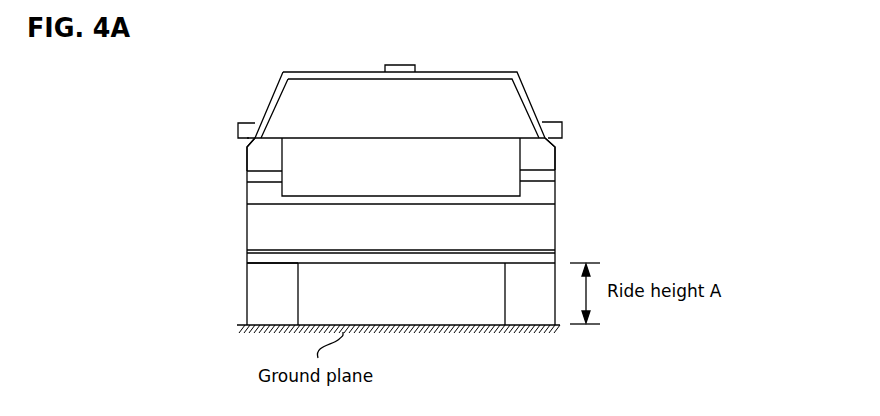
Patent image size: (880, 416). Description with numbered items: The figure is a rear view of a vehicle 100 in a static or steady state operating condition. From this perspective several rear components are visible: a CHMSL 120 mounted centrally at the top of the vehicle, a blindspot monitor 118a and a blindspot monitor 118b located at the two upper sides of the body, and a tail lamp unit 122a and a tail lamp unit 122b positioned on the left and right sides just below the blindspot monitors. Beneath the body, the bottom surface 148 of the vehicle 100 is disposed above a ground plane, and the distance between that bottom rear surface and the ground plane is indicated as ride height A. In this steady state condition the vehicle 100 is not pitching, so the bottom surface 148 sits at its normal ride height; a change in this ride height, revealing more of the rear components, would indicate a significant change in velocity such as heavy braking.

The vehicle 100 is at (740, 56).
The blindspot monitor 118a is at (238, 127).
The blindspot monitor 118b is at (562, 128).
The CHMSL 120 is at (405, 65).
The tail lamp unit 122a is at (247, 160).
The tail lamp unit 122b is at (555, 162).
The bottom surface 148 is at (270, 263).